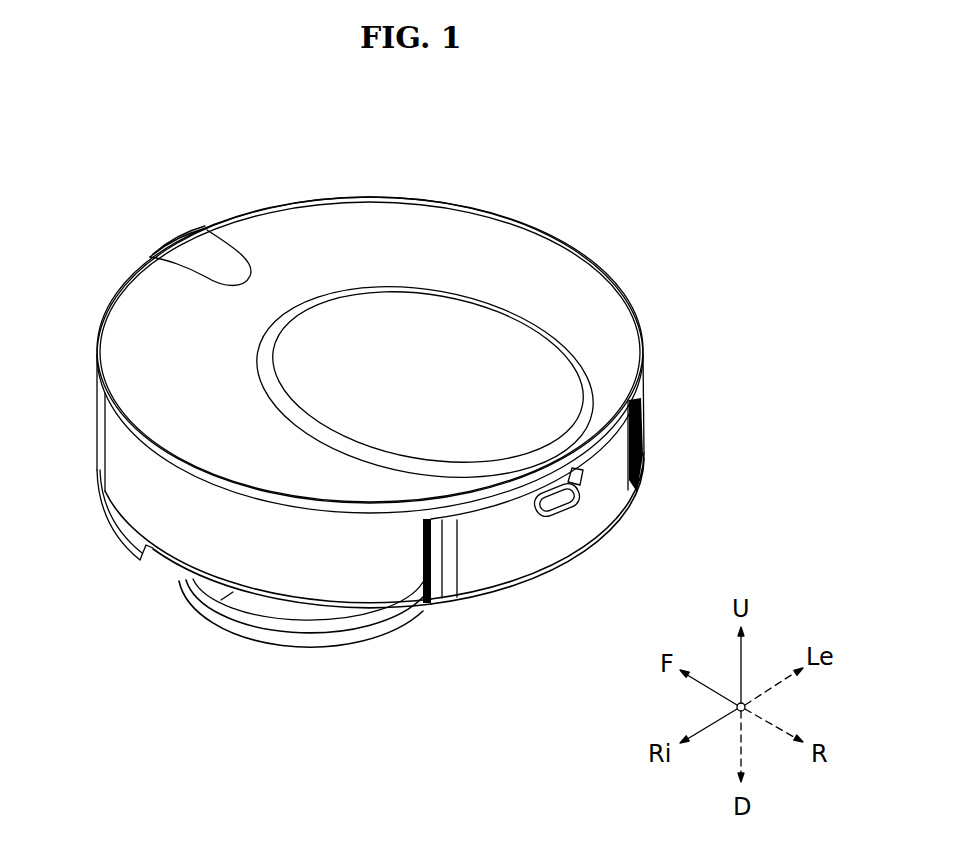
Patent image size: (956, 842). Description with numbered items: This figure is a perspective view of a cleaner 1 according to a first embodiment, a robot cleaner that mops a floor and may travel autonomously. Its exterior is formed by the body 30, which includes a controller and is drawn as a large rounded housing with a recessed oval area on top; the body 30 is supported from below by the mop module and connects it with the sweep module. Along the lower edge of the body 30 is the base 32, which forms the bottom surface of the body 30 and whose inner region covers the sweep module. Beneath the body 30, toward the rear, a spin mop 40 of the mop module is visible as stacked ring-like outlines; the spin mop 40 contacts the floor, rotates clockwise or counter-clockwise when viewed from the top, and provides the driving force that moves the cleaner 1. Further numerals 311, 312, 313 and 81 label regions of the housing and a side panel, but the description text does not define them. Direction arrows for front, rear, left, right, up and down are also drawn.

The cleaner 1 is at (83, 146).
The body 30 is at (578, 307).
The top surface rim of upper body 311 is at (620, 347).
The side wall of upper body 312 is at (385, 570).
The front surface of side panel 313 is at (508, 559).
The base 32 is at (119, 559).
The spin mop 40 is at (286, 661).
The side panel / dust bin cover 81 is at (587, 522).